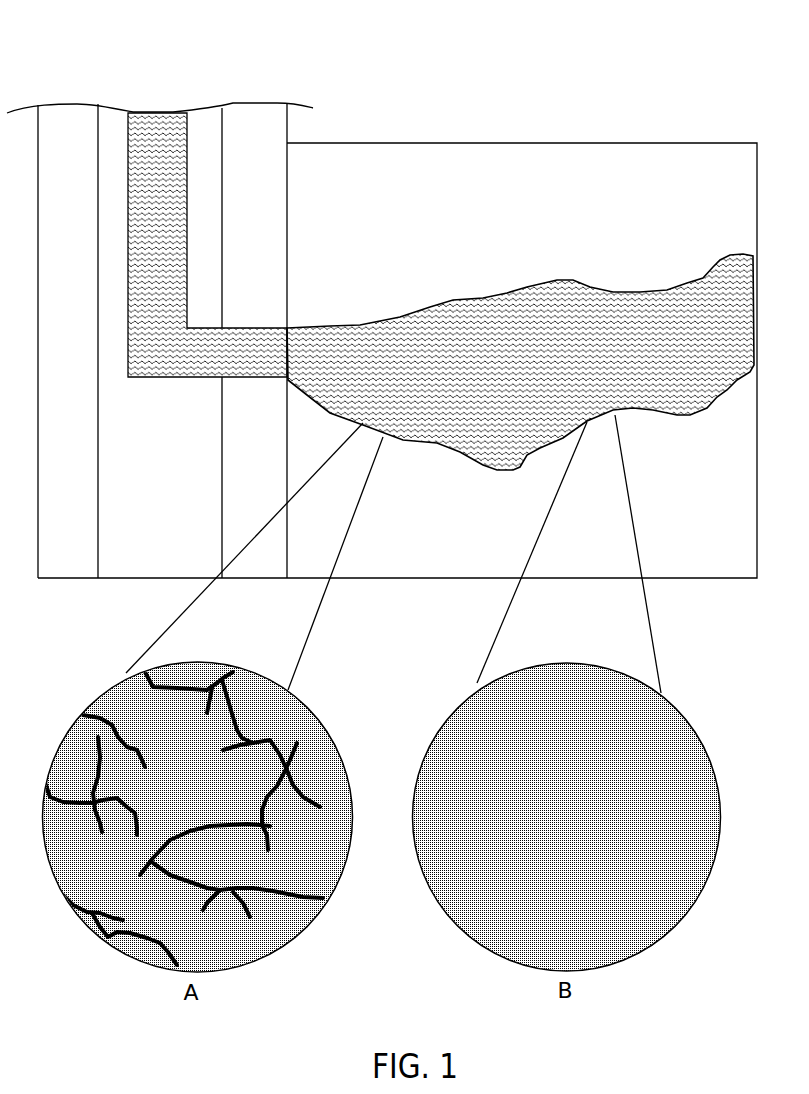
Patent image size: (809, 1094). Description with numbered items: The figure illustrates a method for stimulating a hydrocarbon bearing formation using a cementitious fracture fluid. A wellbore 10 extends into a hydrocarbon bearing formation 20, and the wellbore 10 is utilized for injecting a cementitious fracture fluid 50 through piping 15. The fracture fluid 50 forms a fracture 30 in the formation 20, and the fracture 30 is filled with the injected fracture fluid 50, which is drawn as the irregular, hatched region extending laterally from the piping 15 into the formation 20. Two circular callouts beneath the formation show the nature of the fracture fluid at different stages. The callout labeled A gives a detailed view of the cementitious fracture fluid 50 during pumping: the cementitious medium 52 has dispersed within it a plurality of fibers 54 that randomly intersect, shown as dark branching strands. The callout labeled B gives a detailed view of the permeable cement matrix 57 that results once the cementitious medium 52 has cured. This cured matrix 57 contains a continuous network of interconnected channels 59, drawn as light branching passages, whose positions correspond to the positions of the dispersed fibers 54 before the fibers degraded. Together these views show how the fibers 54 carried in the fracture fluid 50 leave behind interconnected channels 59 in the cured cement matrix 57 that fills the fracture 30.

The wellbore 10 is at (278, 128).
The piping 15 is at (172, 377).
The hydrocarbon bearing formation 20 is at (535, 163).
The fracture 30 is at (720, 262).
The cementitious fracture fluid 50 is at (738, 315).
The cementitious medium 52 is at (70, 750).
The fibers 54 is at (87, 917).
The permeable cement matrix 57 is at (685, 757).
The interconnected channels 59 is at (667, 883).